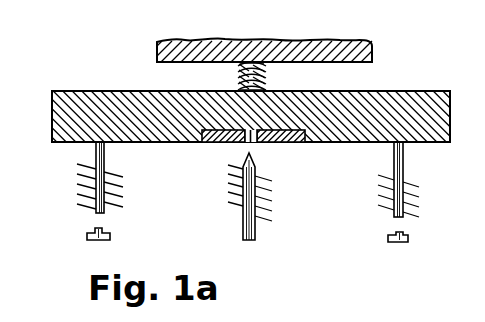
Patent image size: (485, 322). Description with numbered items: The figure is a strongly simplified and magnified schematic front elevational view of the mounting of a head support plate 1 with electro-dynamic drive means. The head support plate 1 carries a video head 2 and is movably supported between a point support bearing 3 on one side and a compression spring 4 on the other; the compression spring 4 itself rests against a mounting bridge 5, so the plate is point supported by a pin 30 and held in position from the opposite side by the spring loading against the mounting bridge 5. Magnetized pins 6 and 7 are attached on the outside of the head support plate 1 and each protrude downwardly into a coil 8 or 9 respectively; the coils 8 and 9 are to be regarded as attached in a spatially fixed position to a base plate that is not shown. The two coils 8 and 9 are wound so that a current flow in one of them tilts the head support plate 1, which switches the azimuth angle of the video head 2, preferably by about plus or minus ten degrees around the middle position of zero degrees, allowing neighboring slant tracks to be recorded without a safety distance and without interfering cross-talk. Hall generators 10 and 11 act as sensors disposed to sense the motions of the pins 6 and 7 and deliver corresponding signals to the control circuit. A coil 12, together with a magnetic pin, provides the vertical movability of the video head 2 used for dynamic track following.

The head support plate 1 is at (424, 143).
The video head 2 is at (257, 143).
The point support bearing 3 is at (248, 143).
The compression spring 4 is at (236, 72).
The mounting bridge 5 is at (373, 47).
The magnetized pin 6 is at (96, 150).
The magnetized pin 7 is at (394, 155).
The coil 8 is at (113, 188).
The coil 9 is at (380, 204).
The Hall generator 10 is at (88, 237).
The Hall generator 11 is at (409, 240).
The coil 12 is at (270, 190).
The pin 30 is at (245, 226).